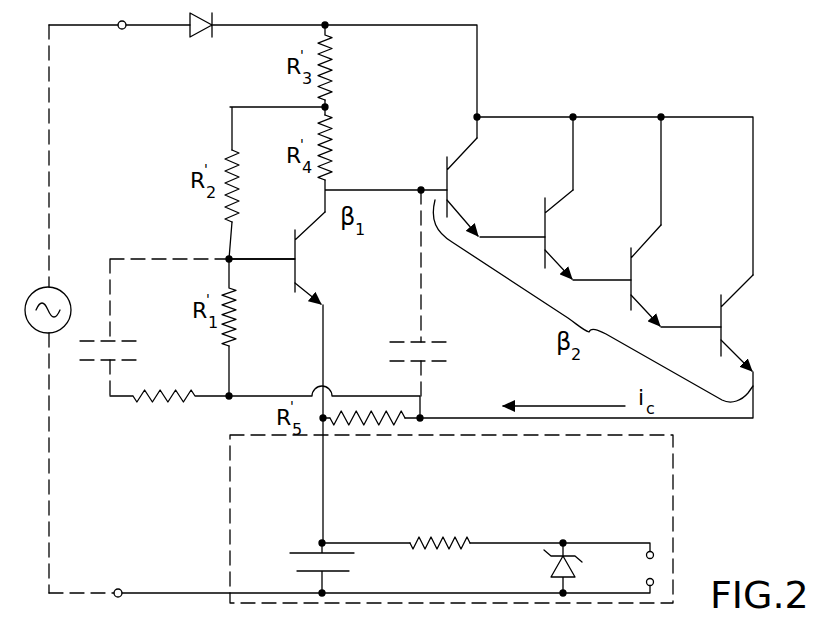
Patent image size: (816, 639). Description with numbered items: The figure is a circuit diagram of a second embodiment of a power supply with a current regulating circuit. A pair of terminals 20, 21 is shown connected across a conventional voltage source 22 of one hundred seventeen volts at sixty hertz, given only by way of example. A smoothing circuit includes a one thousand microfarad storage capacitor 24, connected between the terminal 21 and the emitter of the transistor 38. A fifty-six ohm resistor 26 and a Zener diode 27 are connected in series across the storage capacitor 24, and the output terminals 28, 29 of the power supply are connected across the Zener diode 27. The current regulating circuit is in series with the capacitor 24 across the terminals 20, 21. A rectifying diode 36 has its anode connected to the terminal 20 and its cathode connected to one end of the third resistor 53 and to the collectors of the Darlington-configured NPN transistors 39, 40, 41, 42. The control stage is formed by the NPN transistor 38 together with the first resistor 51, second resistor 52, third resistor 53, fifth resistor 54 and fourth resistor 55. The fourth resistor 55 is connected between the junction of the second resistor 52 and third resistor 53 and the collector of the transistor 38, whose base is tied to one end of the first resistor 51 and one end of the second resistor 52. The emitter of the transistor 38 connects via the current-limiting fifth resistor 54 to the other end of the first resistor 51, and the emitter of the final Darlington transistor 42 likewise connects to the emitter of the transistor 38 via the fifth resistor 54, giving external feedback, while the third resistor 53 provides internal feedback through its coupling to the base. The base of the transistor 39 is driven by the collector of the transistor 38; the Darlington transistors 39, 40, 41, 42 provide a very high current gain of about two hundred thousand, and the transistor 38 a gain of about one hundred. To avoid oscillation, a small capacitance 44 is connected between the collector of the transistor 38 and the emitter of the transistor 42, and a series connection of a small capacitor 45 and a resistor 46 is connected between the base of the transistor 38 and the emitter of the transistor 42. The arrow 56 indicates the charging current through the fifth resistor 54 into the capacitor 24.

The terminal 20 is at (122, 29).
The terminal 21 is at (119, 589).
The voltage source 22 is at (66, 290).
The storage capacitor 24 is at (345, 563).
The resistor 26 is at (466, 543).
The Zener diode 27 is at (552, 572).
The output terminal 28 is at (654, 554).
The output terminal 29 is at (646, 581).
The rectifying diode 36 is at (201, 38).
The NPN transistor 38 is at (307, 247).
The NPN junction transistor 39 is at (458, 188).
The NPN junction transistor 40 is at (556, 238).
The NPN junction transistor 41 is at (640, 277).
The NPN junction transistor 42 is at (730, 327).
The capacitance 44 is at (432, 343).
The capacitor 45 is at (134, 340).
The resistor 46 is at (172, 402).
The first resistor 51 is at (236, 321).
The second resistor 52 is at (238, 205).
The third resistor 53 is at (331, 73).
The fifth resistor 54 is at (372, 416).
The fourth resistor 55 is at (331, 150).
The arrow 56 is at (598, 405).